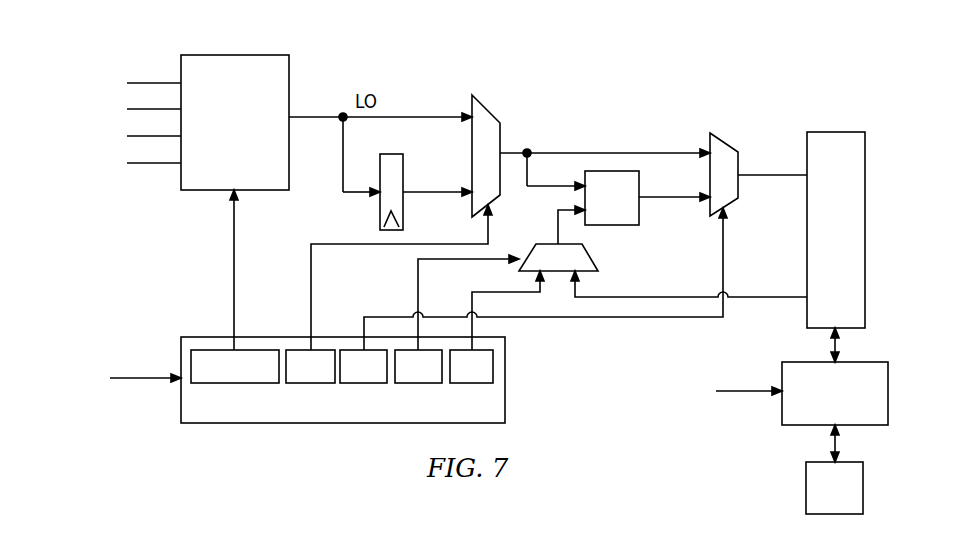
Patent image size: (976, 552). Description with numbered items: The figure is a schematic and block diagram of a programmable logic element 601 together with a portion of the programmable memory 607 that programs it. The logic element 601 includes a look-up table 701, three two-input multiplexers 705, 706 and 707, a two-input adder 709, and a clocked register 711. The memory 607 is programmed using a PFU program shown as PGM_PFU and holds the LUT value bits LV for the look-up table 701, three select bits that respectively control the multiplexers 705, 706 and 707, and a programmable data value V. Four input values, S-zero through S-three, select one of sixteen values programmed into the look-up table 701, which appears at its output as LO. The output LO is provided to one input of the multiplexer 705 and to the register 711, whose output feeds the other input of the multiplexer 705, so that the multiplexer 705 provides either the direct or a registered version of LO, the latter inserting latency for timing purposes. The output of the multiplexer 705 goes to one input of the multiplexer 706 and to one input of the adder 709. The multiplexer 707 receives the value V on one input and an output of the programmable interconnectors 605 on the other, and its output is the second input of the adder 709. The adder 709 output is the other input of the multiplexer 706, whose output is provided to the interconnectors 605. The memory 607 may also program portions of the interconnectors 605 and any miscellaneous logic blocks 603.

The programmable logic element 601 is at (633, 64).
The miscellaneous logic blocks 603 is at (834, 488).
The programmable interconnectors 605 is at (837, 132).
The programmable memory 607 is at (213, 336).
The look-up table 701 is at (235, 55).
The multiplexer 705 is at (487, 108).
The multiplexer 706 is at (727, 143).
The multiplexer 707 is at (593, 260).
The adder 709 is at (608, 225).
The clocked register 711 is at (403, 172).